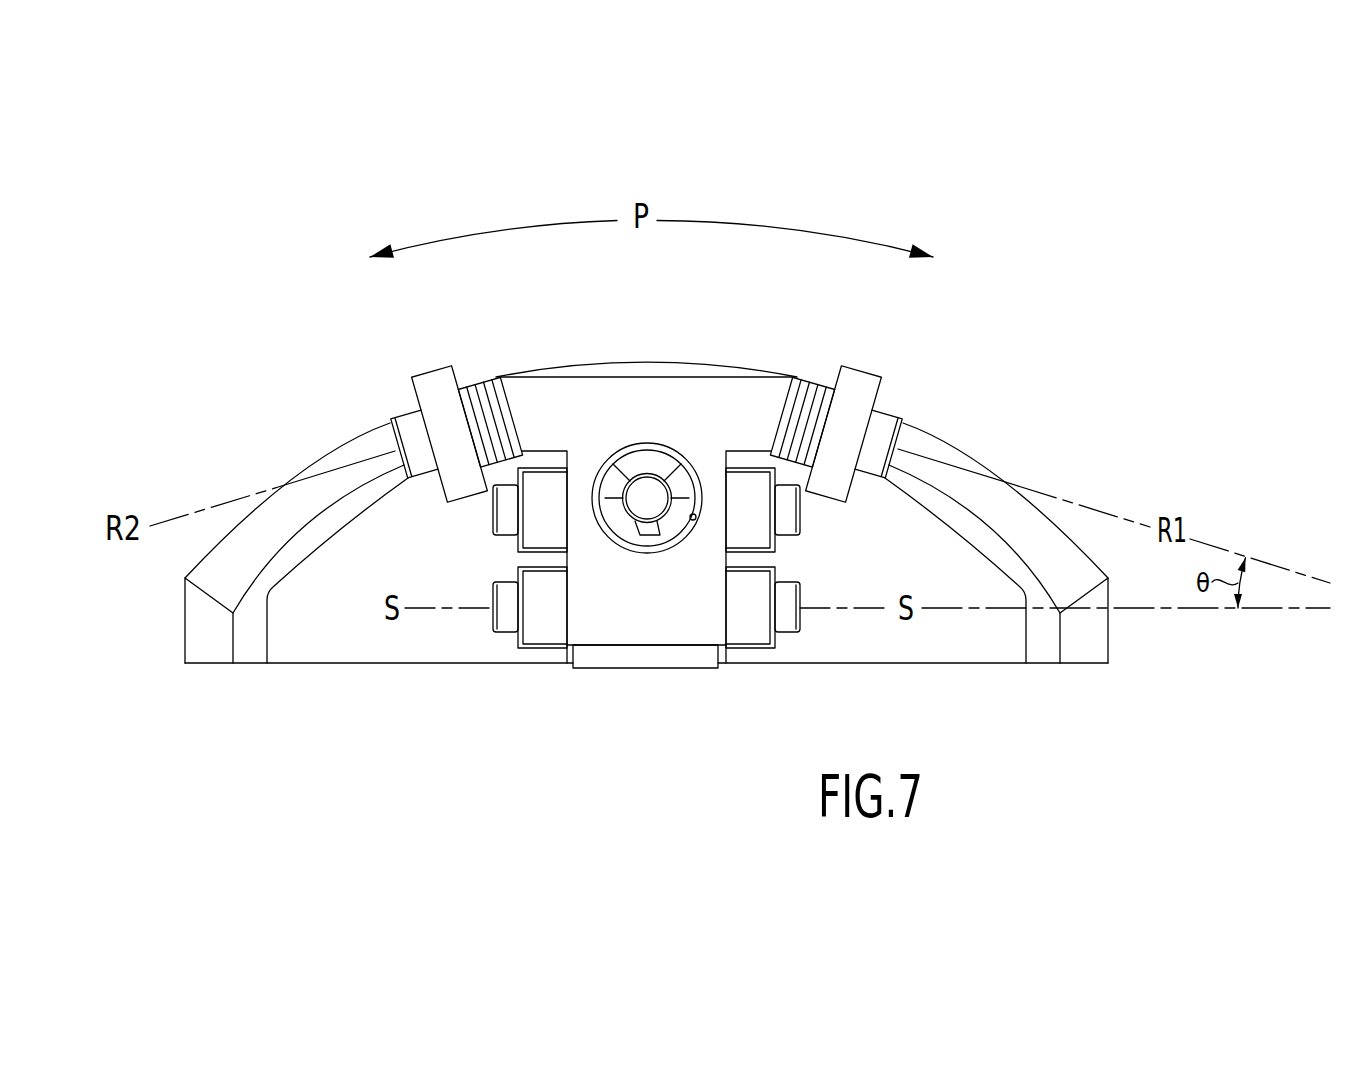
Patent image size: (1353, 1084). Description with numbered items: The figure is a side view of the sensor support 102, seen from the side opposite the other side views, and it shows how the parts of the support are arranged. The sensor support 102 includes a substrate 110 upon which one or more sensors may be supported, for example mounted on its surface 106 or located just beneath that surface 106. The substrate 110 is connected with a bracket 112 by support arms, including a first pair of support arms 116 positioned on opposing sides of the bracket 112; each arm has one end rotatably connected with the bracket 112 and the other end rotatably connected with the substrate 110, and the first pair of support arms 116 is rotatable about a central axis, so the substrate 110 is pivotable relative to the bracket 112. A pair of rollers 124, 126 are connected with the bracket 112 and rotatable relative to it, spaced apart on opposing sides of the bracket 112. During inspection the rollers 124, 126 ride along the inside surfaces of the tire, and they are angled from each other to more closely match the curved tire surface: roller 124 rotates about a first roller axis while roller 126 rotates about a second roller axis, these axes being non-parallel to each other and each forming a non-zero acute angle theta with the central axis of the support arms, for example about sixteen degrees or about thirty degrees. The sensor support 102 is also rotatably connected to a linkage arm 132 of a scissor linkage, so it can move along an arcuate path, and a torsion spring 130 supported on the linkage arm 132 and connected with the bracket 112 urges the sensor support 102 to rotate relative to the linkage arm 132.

The sensor support 102 is at (666, 512).
The surface 106 is at (295, 468).
The substrate 110 is at (963, 461).
The bracket 112 is at (632, 617).
The first pair of support arms 116 is at (537, 518).
The roller 124 is at (857, 380).
The roller 126 is at (437, 385).
The torsion spring 130 is at (667, 462).
The linkage arm 132 is at (645, 497).